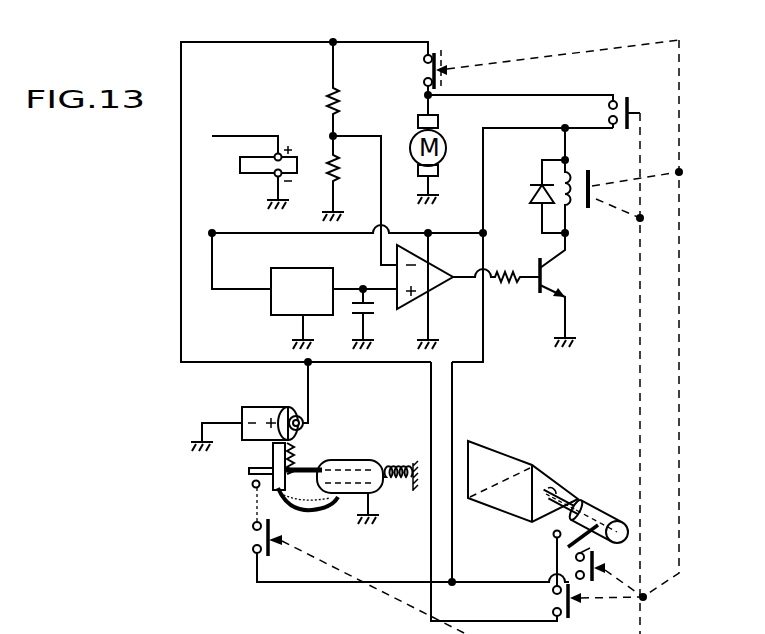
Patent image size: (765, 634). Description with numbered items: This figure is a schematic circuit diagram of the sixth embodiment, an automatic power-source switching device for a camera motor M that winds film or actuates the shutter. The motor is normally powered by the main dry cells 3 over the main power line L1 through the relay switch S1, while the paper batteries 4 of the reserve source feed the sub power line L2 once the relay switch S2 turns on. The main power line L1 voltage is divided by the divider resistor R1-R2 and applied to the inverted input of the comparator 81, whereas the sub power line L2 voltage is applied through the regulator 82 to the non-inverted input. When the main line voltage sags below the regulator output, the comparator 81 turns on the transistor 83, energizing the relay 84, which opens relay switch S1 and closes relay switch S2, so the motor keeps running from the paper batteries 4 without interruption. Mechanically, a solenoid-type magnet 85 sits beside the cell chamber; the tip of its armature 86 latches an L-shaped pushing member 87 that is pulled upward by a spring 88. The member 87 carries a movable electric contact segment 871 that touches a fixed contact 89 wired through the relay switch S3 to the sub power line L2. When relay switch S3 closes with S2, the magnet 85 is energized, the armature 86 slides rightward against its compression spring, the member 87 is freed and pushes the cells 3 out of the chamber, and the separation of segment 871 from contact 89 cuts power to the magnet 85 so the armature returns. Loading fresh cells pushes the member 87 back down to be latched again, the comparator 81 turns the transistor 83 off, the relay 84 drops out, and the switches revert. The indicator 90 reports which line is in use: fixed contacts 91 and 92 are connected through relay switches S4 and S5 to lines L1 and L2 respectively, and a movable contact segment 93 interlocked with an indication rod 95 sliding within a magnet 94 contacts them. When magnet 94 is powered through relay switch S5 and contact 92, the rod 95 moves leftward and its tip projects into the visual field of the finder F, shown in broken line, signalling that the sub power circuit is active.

The main power line L1 is at (236, 40).
The sub power line L2 is at (280, 234).
The divider resistor R1 is at (327, 95).
The divider resistor R2 is at (331, 153).
The relay switch S1 is at (426, 71).
The relay switch S2 is at (633, 106).
The relay switch S3 is at (272, 530).
The relay switch S4 is at (555, 600).
The relay switch S5 is at (596, 567).
The paper batteries 4 is at (262, 176).
The regulator 82 is at (270, 303).
The comparator 81 is at (436, 286).
The transistor 83 is at (538, 284).
The relay 84 is at (594, 210).
The main dry cells 3 is at (262, 405).
The spring 88 is at (296, 452).
The L-shaped pushing member 87 is at (272, 458).
The movable electric contact segment 871 is at (250, 471).
The fixed contact 89 is at (254, 488).
The armature 86 is at (302, 468).
The magnet 85 is at (346, 462).
The finder F is at (546, 485).
The indicator 90 is at (573, 480).
The indication rod 95 is at (578, 506).
The magnet 94 is at (622, 510).
The movable contact segment 93 is at (604, 528).
The fixed contact 92 is at (596, 547).
The fixed contact 91 is at (552, 536).